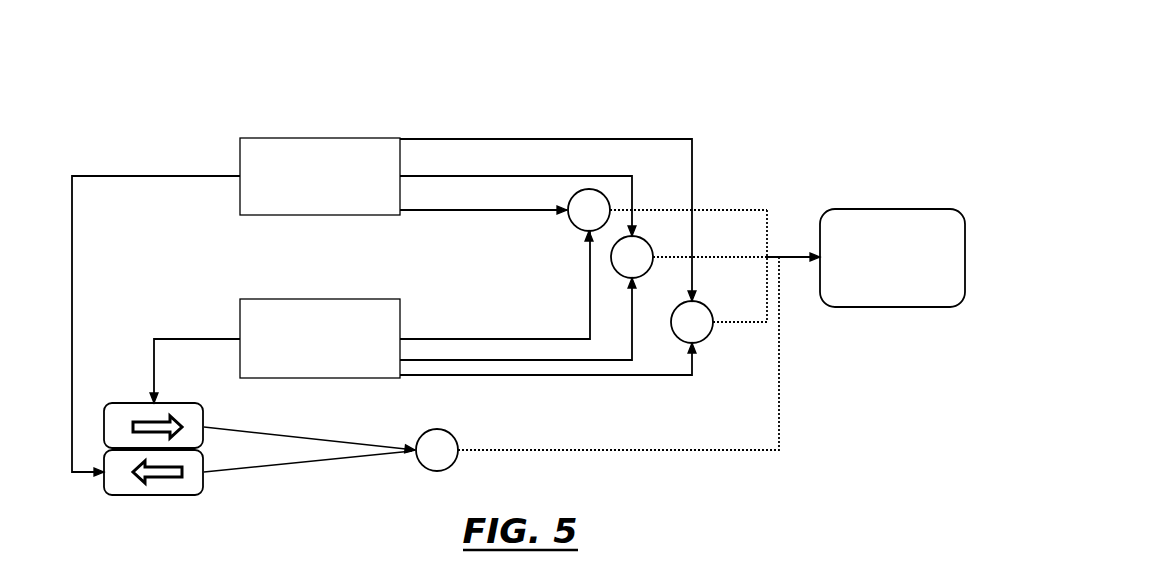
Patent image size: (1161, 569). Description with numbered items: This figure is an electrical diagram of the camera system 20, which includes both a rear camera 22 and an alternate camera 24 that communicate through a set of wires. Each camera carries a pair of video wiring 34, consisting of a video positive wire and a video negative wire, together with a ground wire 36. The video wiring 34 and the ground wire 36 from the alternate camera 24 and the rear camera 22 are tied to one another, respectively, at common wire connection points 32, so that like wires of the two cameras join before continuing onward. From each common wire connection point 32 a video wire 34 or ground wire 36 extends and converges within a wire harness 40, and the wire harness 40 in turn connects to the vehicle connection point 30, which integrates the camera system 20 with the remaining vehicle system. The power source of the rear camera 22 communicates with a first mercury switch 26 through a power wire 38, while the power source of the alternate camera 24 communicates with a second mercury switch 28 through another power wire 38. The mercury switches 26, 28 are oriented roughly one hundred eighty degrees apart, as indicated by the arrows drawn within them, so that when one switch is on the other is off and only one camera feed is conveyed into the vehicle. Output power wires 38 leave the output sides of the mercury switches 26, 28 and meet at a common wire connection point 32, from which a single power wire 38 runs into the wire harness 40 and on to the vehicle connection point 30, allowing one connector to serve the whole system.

The camera system 20 is at (750, 66).
The rear camera 22 is at (322, 304).
The alternate camera 24 is at (259, 143).
The first mercury switch 26 is at (118, 416).
The second mercury switch 28 is at (120, 486).
The vehicle connection point 30 is at (935, 222).
The common wire connection point 32 is at (582, 220).
The video wiring 34 is at (500, 140).
The ground wire 36 is at (437, 212).
The power wire 38 is at (118, 175).
The wire harness 40 is at (790, 255).